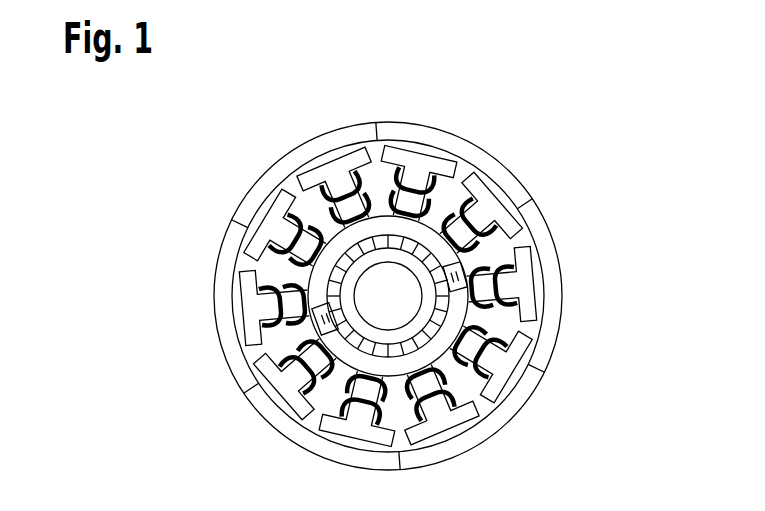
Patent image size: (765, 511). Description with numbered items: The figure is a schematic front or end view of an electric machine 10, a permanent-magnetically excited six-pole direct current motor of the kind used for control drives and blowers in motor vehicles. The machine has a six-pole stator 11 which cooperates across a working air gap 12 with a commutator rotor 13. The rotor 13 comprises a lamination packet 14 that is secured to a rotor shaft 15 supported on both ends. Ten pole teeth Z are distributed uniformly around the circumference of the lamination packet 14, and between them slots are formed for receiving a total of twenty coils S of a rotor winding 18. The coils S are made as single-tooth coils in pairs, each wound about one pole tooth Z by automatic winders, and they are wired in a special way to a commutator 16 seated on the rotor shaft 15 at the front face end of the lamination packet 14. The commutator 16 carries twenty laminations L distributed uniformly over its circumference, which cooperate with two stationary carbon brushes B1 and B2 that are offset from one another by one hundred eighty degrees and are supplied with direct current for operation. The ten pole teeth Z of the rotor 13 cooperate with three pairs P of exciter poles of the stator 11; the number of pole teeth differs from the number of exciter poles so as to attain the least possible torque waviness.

The electric machine 10 is at (554, 126).
The stator 11 is at (570, 287).
The working air gap 12 is at (538, 212).
The commutator rotor 13 is at (540, 308).
The lamination packet 14 is at (374, 282).
The rotor shaft 15 is at (328, 236).
The commutator 16 is at (313, 275).
The rotor winding 18 is at (272, 198).
The carbon brush B1 is at (462, 258).
The carbon brush B2 is at (323, 338).
The coil S is at (283, 309).
The pole tooth Z is at (508, 386).
The pair of exciter poles P is at (548, 343).
The lamination L is at (432, 352).